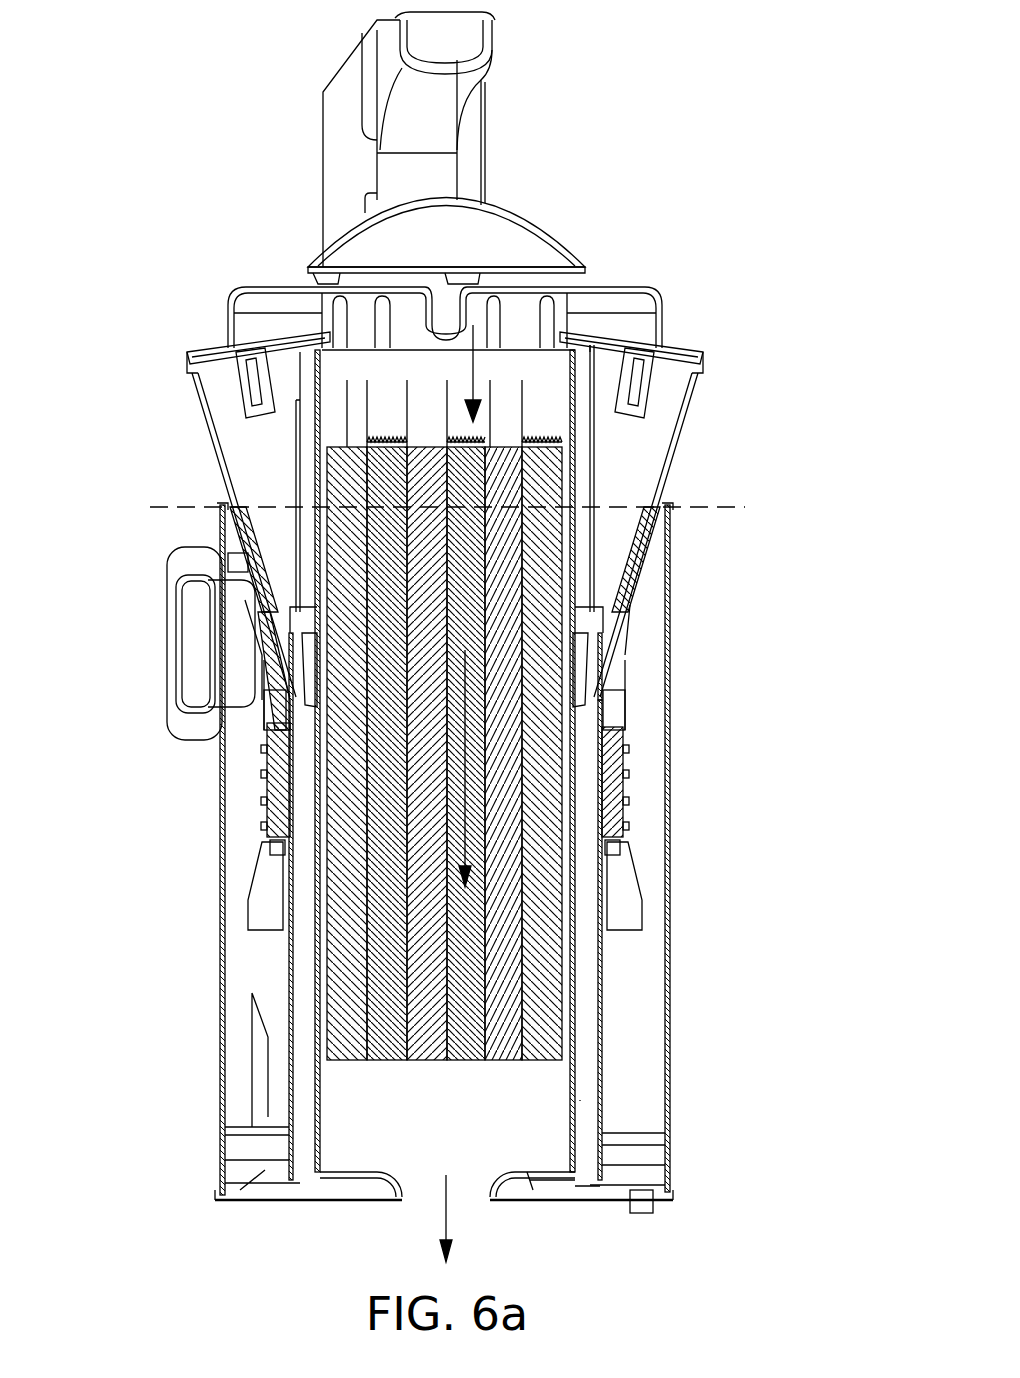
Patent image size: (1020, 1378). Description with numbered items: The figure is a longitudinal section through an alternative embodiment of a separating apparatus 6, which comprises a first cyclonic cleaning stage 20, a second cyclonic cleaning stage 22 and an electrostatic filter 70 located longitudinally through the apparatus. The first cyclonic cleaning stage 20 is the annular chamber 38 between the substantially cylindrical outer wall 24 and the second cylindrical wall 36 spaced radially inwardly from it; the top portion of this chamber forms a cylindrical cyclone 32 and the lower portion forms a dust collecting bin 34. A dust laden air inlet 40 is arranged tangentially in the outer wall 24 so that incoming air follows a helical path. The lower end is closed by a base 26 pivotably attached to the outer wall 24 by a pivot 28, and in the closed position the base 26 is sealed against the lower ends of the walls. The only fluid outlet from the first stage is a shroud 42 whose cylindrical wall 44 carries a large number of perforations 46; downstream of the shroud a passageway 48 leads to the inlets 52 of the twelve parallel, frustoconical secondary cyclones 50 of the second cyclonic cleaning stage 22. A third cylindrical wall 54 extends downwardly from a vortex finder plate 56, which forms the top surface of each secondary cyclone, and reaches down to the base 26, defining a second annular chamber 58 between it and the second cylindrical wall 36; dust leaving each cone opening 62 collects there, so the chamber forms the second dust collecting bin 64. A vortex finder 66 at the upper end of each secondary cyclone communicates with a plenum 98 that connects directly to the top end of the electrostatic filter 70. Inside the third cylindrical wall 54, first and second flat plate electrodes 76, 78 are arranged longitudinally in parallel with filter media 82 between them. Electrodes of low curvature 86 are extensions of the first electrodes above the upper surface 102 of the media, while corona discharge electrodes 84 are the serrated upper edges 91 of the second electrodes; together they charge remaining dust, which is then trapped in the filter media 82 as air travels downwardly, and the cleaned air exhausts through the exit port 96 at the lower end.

The separating apparatus 6 is at (237, 193).
The first cyclonic cleaning stage 20 is at (638, 757).
The second cyclonic cleaning stage 22 is at (699, 456).
The outer wall 24 is at (672, 925).
The base 26 is at (590, 1208).
The pivot 28 is at (663, 1190).
The cylindrical cyclone 32 is at (659, 797).
The dust collecting bin 34 is at (633, 1110).
The second cylindrical wall 36 is at (605, 995).
The annular chamber 38 is at (654, 962).
The dust laden air inlet 40 is at (232, 673).
The shroud 42 is at (630, 680).
The cylindrical wall 44 is at (630, 722).
The perforations 46 is at (628, 800).
The passageway 48 is at (580, 562).
The secondary cyclones 50 is at (640, 470).
The inlets 52 is at (640, 345).
The third cylindrical wall 54 is at (573, 950).
The vortex finder plate 56 is at (590, 335).
The second annular chamber 58 is at (543, 1210).
The cone opening 62 is at (620, 607).
The second dust collecting bin 64 is at (585, 885).
The vortex finder 66 is at (668, 395).
The electrostatic filter 70 is at (605, 838).
The first flat plate electrodes 76 is at (367, 770).
The second flat plate electrodes 78 is at (400, 833).
The filter media 82 is at (392, 663).
The corona discharge electrodes 84 is at (386, 414).
The electrodes of low curvature 86 is at (262, 352).
The serrated upper edges 91 is at (535, 437).
The exit port 96 is at (421, 1180).
The plenum 98 is at (270, 325).
The upper surface 102 is at (500, 445).